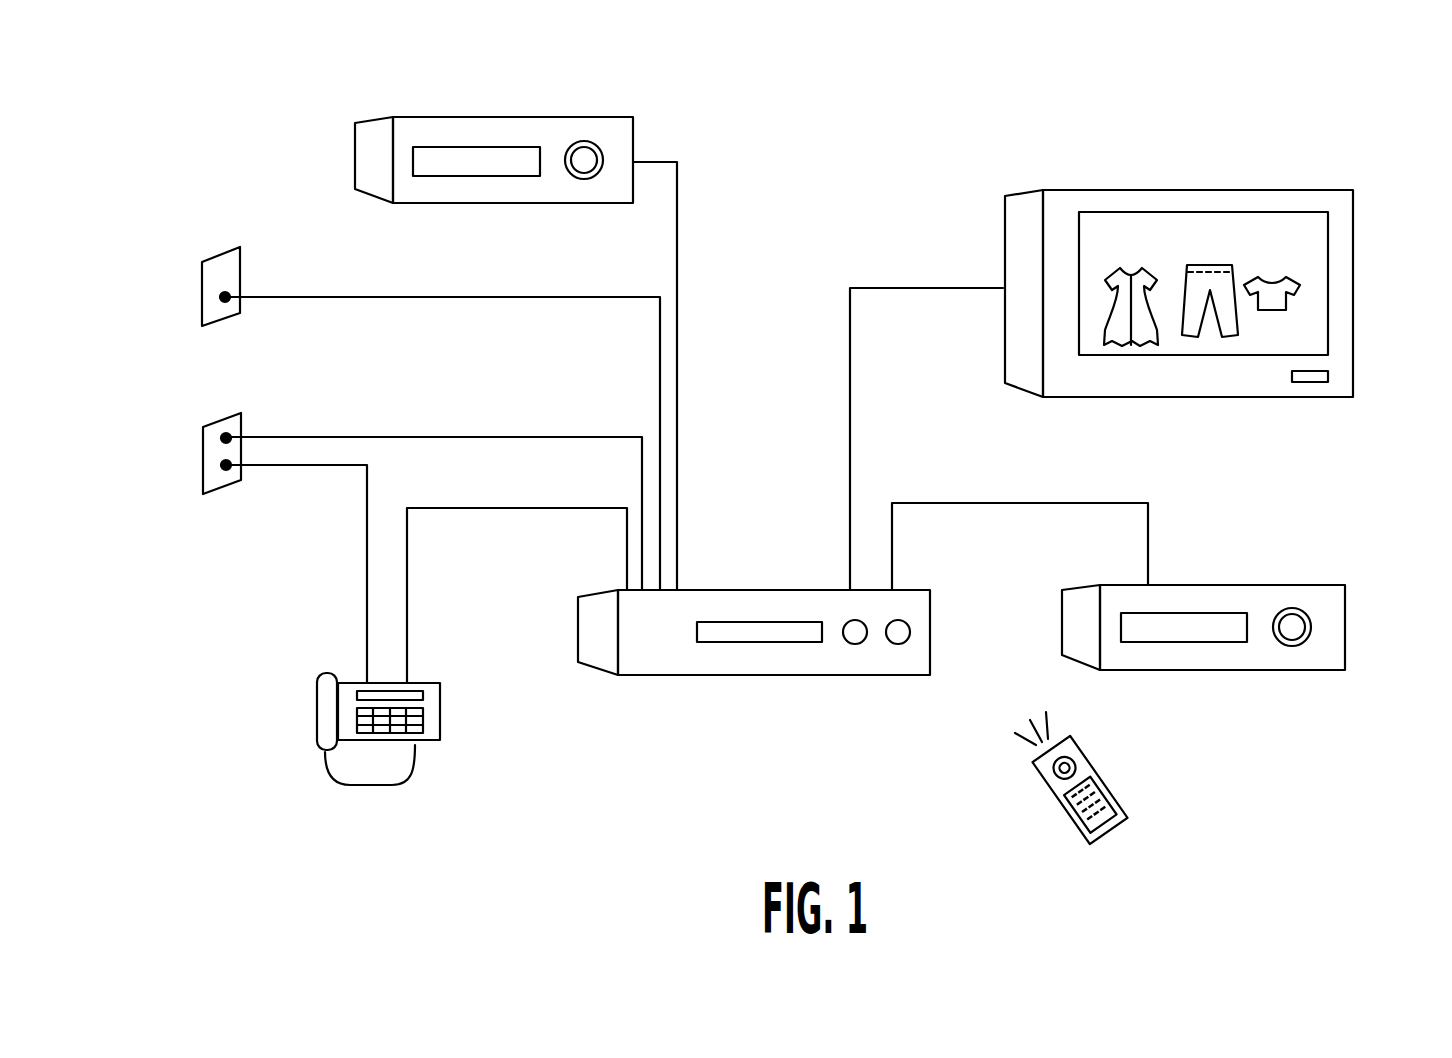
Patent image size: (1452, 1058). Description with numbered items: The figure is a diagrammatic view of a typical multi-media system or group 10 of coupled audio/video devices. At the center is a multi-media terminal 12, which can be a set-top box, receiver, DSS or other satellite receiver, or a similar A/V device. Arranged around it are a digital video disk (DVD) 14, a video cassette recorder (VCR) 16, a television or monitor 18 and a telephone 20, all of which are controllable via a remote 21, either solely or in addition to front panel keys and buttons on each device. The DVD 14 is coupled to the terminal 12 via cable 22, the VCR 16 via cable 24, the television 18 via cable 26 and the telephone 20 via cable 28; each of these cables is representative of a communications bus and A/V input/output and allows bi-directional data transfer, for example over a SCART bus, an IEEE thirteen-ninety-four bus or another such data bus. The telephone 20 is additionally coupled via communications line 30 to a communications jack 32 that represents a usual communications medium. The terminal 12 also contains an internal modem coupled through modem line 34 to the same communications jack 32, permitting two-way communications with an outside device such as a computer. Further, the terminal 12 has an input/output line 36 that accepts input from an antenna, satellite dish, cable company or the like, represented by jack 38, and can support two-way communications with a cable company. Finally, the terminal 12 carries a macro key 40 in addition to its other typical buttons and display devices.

The multi-media system 10 is at (950, 140).
The multi-media terminal 12 is at (650, 663).
The digital video disk (DVD) 14 is at (367, 142).
The video cassette recorder (VCR) 16 is at (1335, 605).
The television 18 is at (1353, 285).
The telephone 20 is at (440, 717).
The remote 21 is at (1108, 778).
The cable 22 is at (678, 240).
The cable 24 is at (997, 503).
The cable 26 is at (893, 288).
The cable 28 is at (497, 510).
The communications line 30 is at (367, 562).
The communications jack 32 is at (203, 451).
The modem line 34 is at (474, 436).
The input/output line 36 is at (588, 298).
The jack 38 is at (218, 264).
The macro key 40 is at (898, 638).